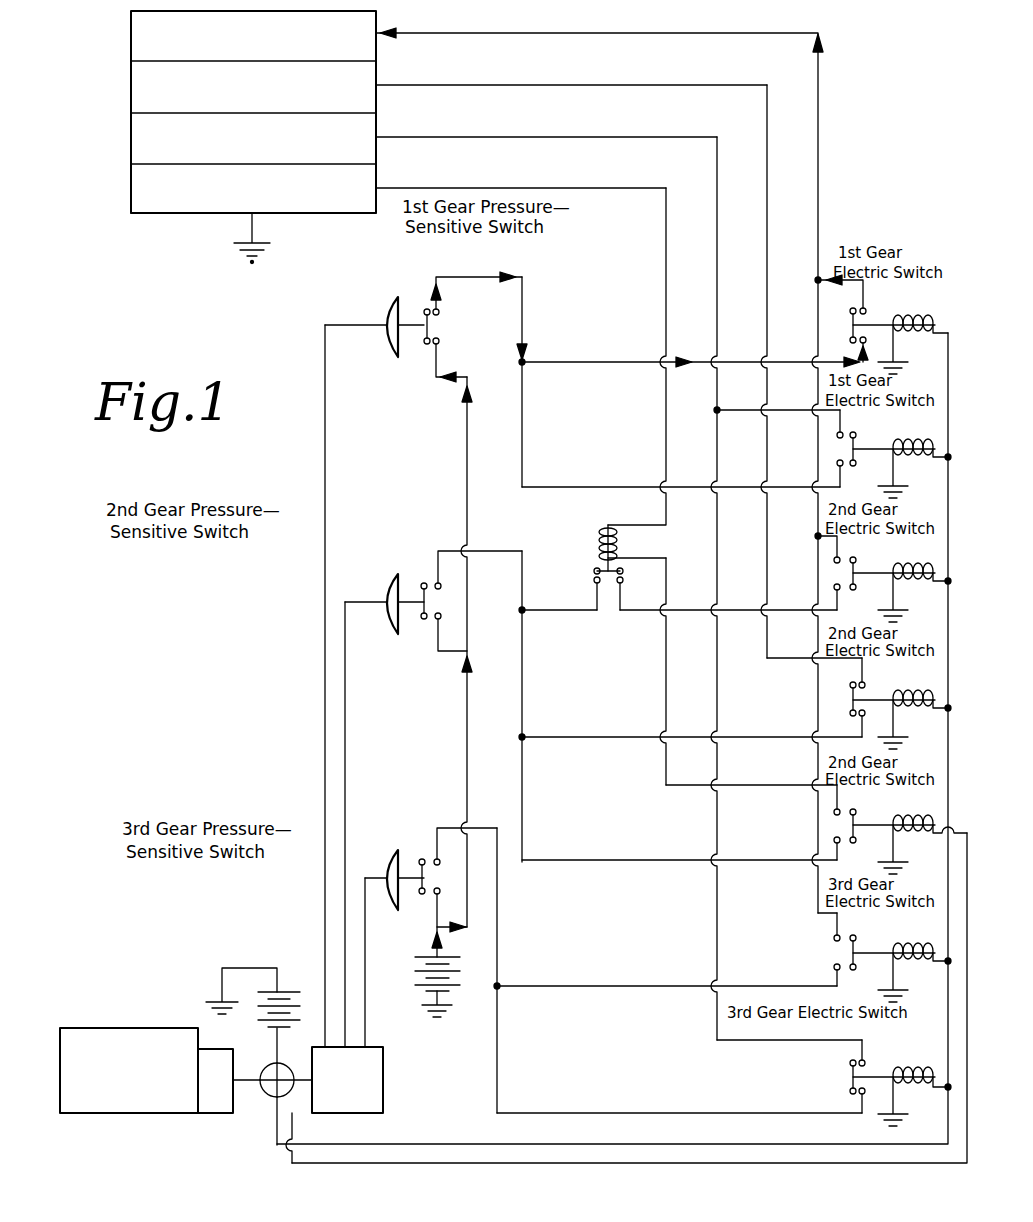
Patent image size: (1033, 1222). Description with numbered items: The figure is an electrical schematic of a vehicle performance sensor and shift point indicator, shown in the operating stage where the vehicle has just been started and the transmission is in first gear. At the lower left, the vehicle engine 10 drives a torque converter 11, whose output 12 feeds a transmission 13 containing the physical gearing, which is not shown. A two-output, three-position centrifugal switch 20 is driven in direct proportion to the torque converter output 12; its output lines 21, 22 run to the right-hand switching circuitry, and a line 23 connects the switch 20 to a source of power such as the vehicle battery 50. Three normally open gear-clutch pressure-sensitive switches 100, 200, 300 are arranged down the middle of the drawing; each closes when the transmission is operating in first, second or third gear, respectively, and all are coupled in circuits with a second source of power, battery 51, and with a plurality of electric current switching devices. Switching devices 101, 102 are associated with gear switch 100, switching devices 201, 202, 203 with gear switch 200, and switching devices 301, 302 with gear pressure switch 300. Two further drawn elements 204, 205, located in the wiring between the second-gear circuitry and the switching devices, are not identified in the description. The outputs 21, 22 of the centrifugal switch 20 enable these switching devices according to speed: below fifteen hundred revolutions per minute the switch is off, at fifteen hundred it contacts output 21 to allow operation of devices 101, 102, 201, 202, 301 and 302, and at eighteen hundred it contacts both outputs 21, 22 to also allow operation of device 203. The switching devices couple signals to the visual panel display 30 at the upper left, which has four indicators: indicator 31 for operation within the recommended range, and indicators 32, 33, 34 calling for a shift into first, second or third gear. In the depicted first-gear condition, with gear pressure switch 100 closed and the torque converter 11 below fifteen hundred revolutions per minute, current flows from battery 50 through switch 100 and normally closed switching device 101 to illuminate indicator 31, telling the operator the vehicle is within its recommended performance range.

The vehicle engine 10 is at (97, 1115).
The torque converter 11 is at (215, 1116).
The output of torque converter 12 is at (251, 1083).
The transmission 13 is at (384, 1075).
The centrifugal switch 20 is at (286, 1067).
The output line 21 is at (270, 1141).
The output line 22 is at (300, 1116).
The line 23 is at (276, 1047).
The visual panel display 30 is at (217, 136).
The visual indicator 31 is at (262, 47).
The visual indicator 32 is at (262, 99).
The visual indicator 33 is at (262, 150).
The visual indicator 34 is at (262, 200).
The vehicle battery 50 is at (282, 988).
The battery 51 is at (430, 956).
The gear-clutch pressure-sensitive switch 100 is at (409, 306).
The electric current switching device 101 is at (870, 314).
The electric current switching device 102 is at (862, 440).
The gear-clutch pressure-sensitive switch 200 is at (411, 583).
The electric current switching device 201 is at (862, 565).
The electric current switching device 202 is at (866, 690).
The electric current switching device 203 is at (862, 816).
The relay coil 204 is at (600, 543).
The relay contacts 205 is at (594, 572).
The gear pressure switch 300 is at (411, 858).
The electric current switching device 301 is at (858, 944).
The electric current switching device 302 is at (866, 1068).